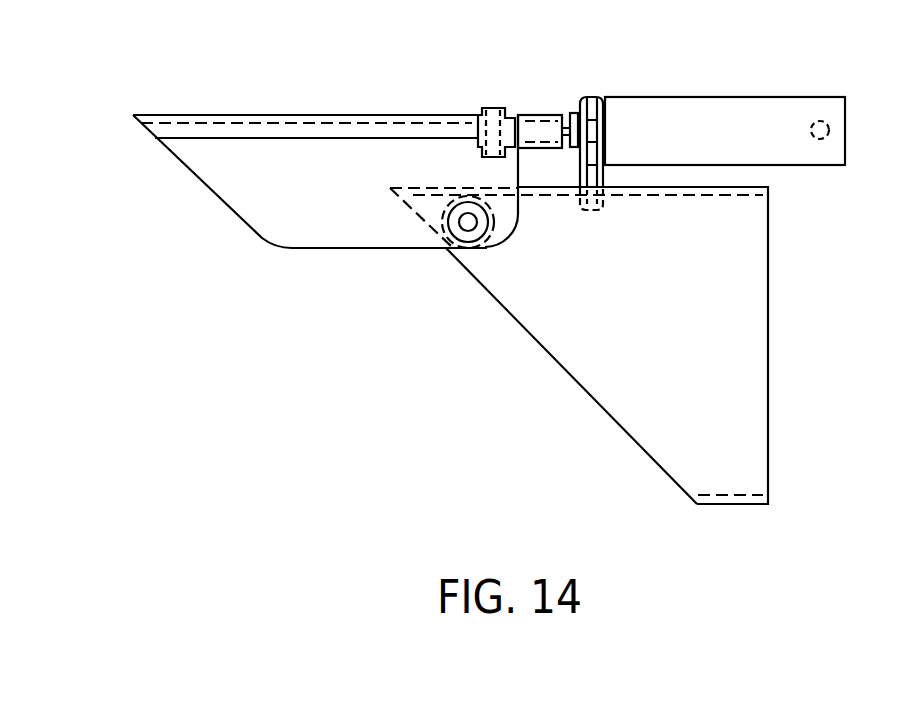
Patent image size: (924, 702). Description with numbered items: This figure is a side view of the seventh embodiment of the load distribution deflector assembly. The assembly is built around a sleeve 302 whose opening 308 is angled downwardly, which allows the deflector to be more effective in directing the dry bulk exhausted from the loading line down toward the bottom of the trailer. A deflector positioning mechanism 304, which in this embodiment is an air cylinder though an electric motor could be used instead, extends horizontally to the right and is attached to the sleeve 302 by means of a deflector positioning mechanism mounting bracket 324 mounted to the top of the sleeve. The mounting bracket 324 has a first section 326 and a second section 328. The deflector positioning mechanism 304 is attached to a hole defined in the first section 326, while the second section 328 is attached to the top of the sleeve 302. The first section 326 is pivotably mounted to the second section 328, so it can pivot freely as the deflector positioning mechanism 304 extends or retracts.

The sleeve 302 is at (745, 398).
The deflector positioning mechanism 304 is at (717, 103).
The opening 308 is at (558, 363).
The deflector positioning mechanism mounting bracket 324 is at (595, 98).
The first section 326 is at (574, 112).
The second section 328 is at (603, 203).